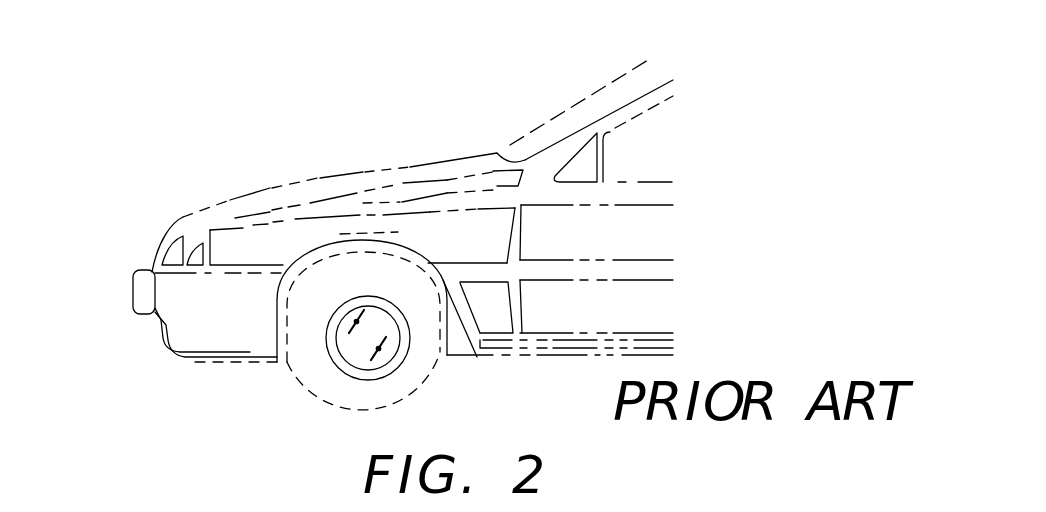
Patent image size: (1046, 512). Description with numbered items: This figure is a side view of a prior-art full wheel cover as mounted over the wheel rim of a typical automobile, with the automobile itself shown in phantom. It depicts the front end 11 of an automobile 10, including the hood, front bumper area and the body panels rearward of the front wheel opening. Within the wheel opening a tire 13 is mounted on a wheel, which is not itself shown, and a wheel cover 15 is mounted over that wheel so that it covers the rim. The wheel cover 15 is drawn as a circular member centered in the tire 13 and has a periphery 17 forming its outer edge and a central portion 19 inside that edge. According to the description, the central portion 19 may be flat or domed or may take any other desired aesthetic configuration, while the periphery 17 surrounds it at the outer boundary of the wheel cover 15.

The automobile 10 is at (283, 153).
The front end 11 is at (163, 353).
The tire 13 is at (400, 392).
The wheel cover 15 is at (365, 345).
The periphery 17 is at (372, 296).
The central portion 19 is at (340, 327).